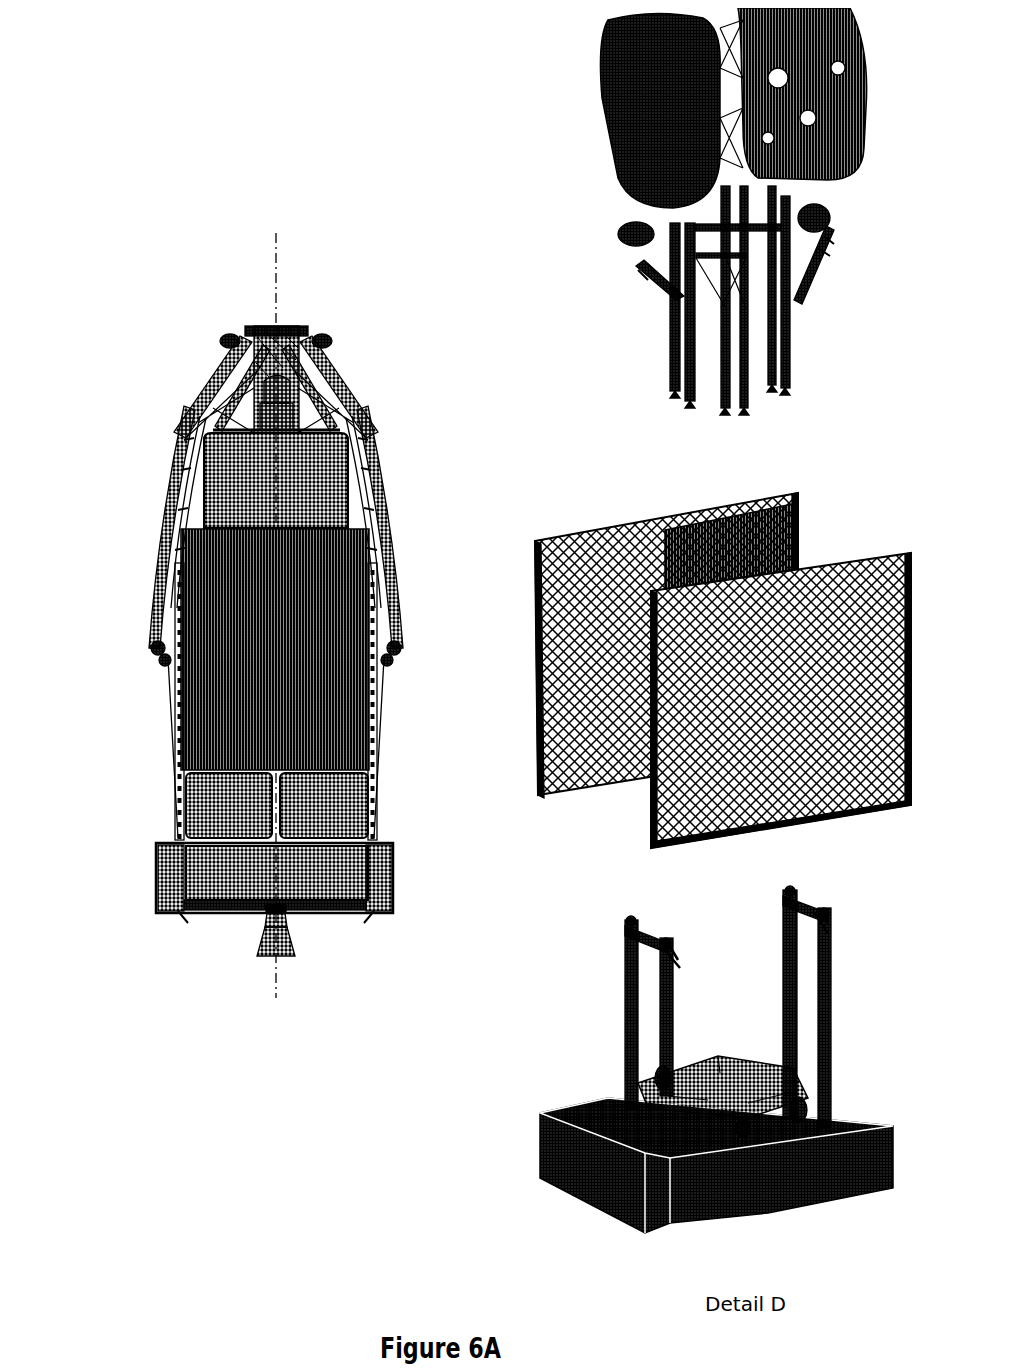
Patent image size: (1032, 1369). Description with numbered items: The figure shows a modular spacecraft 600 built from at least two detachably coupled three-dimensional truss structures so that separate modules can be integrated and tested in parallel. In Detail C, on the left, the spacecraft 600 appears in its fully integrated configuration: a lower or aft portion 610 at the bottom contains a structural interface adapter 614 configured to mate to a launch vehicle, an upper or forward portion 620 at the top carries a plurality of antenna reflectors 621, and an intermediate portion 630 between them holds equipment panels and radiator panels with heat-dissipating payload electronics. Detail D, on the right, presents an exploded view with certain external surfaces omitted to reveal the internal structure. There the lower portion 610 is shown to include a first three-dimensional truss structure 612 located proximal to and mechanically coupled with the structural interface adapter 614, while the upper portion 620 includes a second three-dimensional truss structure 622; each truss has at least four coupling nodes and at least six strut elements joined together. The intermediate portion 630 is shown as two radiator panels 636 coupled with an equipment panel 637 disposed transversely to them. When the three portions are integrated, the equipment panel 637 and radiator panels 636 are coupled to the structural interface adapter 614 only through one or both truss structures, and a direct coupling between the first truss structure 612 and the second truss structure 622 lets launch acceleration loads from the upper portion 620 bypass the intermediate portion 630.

The spacecraft 600 is at (459, 519).
The lower portion 610 is at (128, 862).
The first 3-D truss structure 612 is at (815, 977).
The structural interface adapter 614 is at (645, 1195).
The upper portion 620 is at (170, 321).
The antenna reflectors 621 is at (151, 488).
The second 3-D truss structure 622 is at (795, 310).
The intermediate portion 630 is at (126, 668).
The radiator panels 636 is at (723, 655).
The equipment panel 637 is at (688, 522).